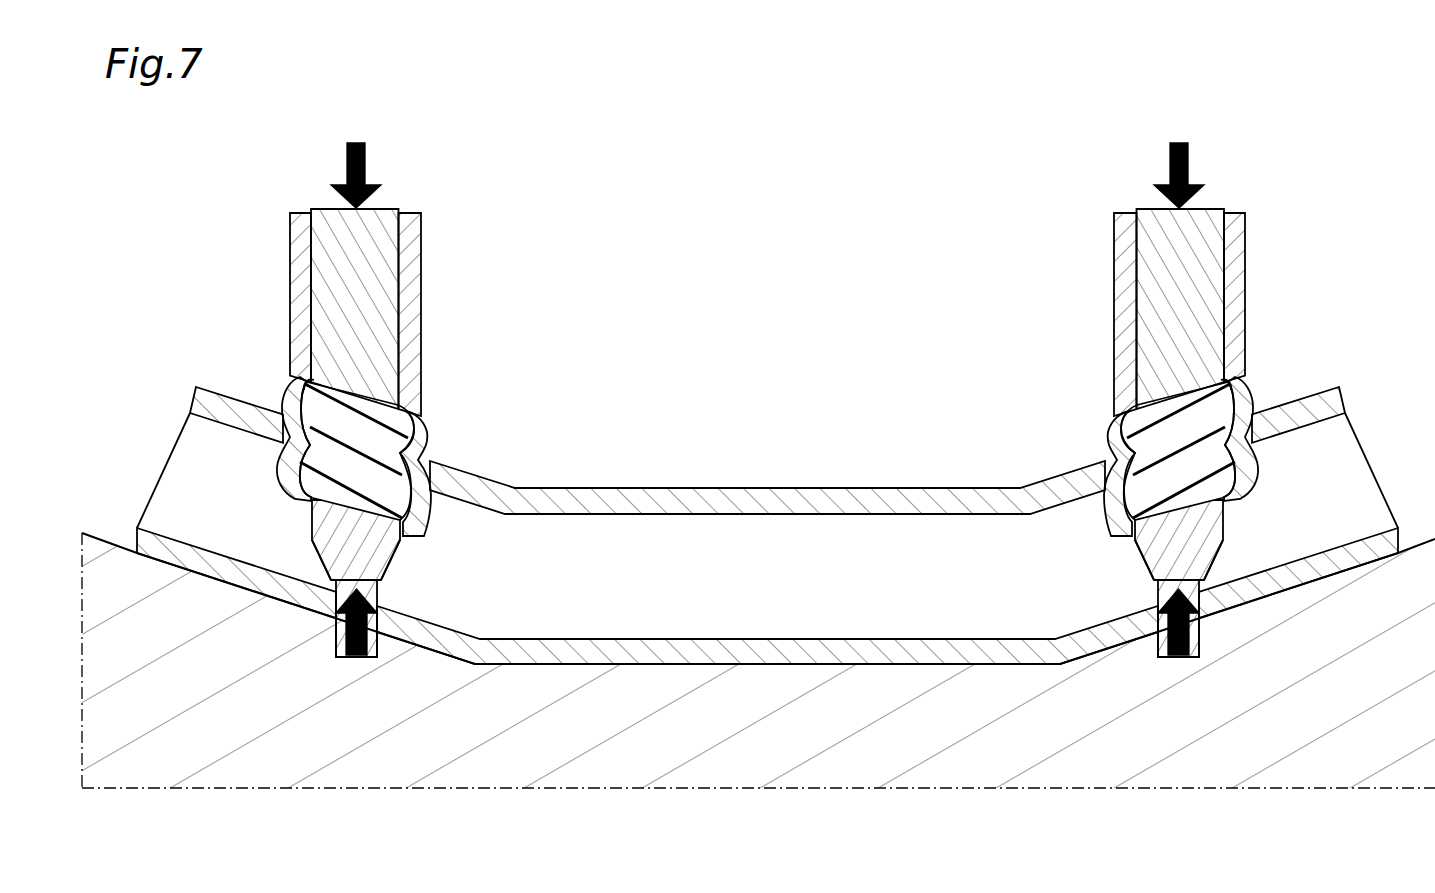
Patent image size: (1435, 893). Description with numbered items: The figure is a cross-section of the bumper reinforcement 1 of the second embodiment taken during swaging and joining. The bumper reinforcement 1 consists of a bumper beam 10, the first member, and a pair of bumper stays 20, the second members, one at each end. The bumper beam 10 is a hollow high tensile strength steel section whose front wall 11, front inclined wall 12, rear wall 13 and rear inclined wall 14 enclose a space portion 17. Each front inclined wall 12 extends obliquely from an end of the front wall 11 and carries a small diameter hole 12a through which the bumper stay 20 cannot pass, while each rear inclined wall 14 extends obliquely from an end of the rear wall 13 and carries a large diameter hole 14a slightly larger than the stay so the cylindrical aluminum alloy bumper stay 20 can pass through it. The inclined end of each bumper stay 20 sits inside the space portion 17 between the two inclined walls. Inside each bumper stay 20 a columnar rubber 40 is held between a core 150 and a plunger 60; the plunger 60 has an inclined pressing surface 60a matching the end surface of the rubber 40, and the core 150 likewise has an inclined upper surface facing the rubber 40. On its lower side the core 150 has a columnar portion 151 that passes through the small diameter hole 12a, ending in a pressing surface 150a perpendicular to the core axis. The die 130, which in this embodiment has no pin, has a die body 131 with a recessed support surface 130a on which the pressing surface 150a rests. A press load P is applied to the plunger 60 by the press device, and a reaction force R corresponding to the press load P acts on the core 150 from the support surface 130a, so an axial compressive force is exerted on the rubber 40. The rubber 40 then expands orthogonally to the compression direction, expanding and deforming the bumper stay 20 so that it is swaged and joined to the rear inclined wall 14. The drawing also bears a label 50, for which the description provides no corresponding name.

The bumper reinforcement 1 is at (1338, 128).
The bumper beam 10 is at (781, 416).
The front wall 11 is at (778, 656).
The front inclined wall 12 is at (231, 571).
The small diameter hole 12a is at (334, 623).
The rear wall 13 is at (763, 500).
The rear inclined wall 14 is at (240, 404).
The large diameter hole 14a is at (428, 445).
The space portion 17 is at (786, 590).
The bumper stay 20 is at (418, 292).
The rubber 40 is at (372, 440).
The lower tool 50 is at (1228, 527).
The plunger 60 is at (767, 303).
The pressing surface 60a is at (312, 388).
The die 130 is at (758, 713).
The support surface 130a is at (390, 637).
The die body 131 is at (1324, 776).
The core 150 is at (762, 621).
The pressing surface 150a is at (352, 660).
The columnar portion 151 is at (332, 586).
The press load P is at (347, 160).
The reaction force R is at (339, 648).